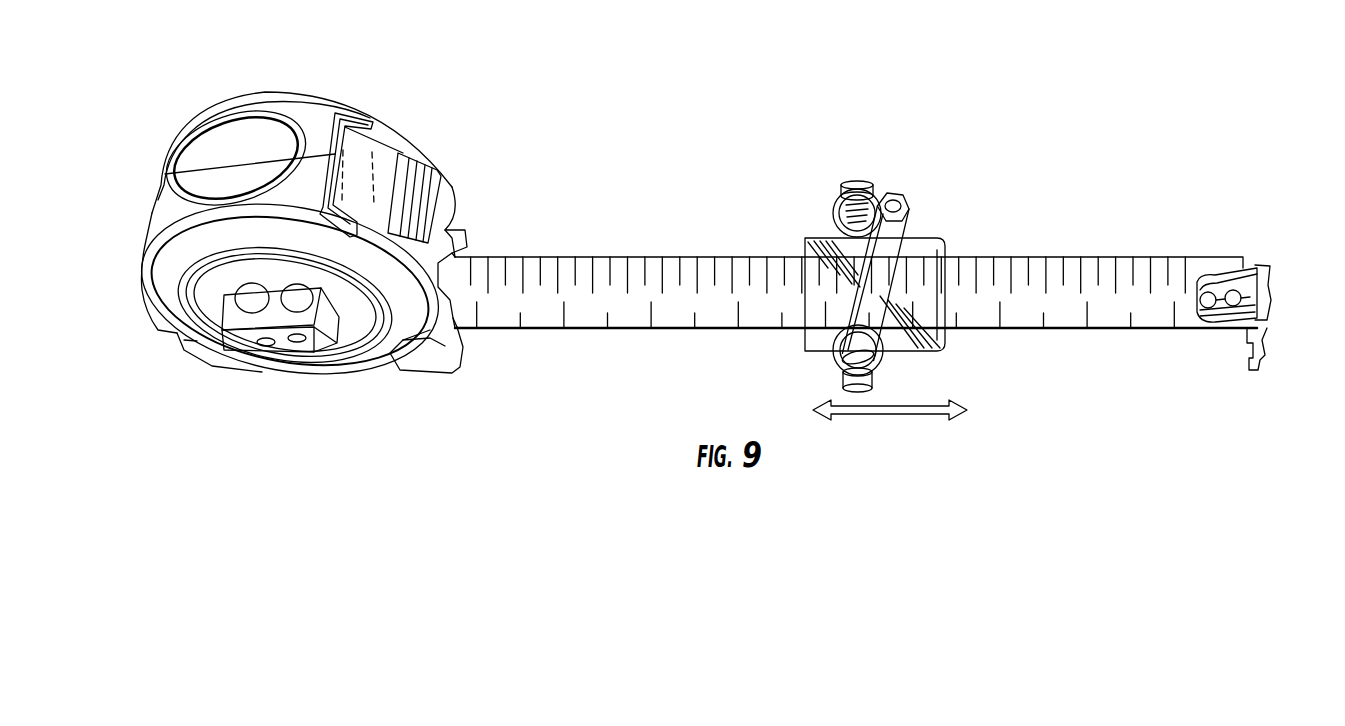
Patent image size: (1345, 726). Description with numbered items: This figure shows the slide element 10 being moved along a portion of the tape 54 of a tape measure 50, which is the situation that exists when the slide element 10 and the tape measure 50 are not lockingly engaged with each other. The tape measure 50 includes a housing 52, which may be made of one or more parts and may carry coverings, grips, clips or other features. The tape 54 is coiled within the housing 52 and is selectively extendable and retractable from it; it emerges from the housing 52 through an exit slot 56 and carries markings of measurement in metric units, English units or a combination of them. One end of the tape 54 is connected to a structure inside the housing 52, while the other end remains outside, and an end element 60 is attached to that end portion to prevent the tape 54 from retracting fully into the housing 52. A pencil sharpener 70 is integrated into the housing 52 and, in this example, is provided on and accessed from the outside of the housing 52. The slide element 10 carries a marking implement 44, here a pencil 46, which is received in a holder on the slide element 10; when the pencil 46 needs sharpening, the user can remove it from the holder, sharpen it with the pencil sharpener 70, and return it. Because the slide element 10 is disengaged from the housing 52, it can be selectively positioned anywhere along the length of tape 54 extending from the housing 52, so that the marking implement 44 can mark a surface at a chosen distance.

The slide element 10 is at (938, 217).
The marking implement 44 is at (898, 198).
The pencil 46 is at (878, 177).
The tape measure 50 is at (373, 385).
The housing 52 is at (320, 95).
The tape 54 is at (670, 263).
The exit slot 56 is at (470, 265).
The end element 60 is at (1266, 312).
The pencil sharpener 70 is at (315, 333).